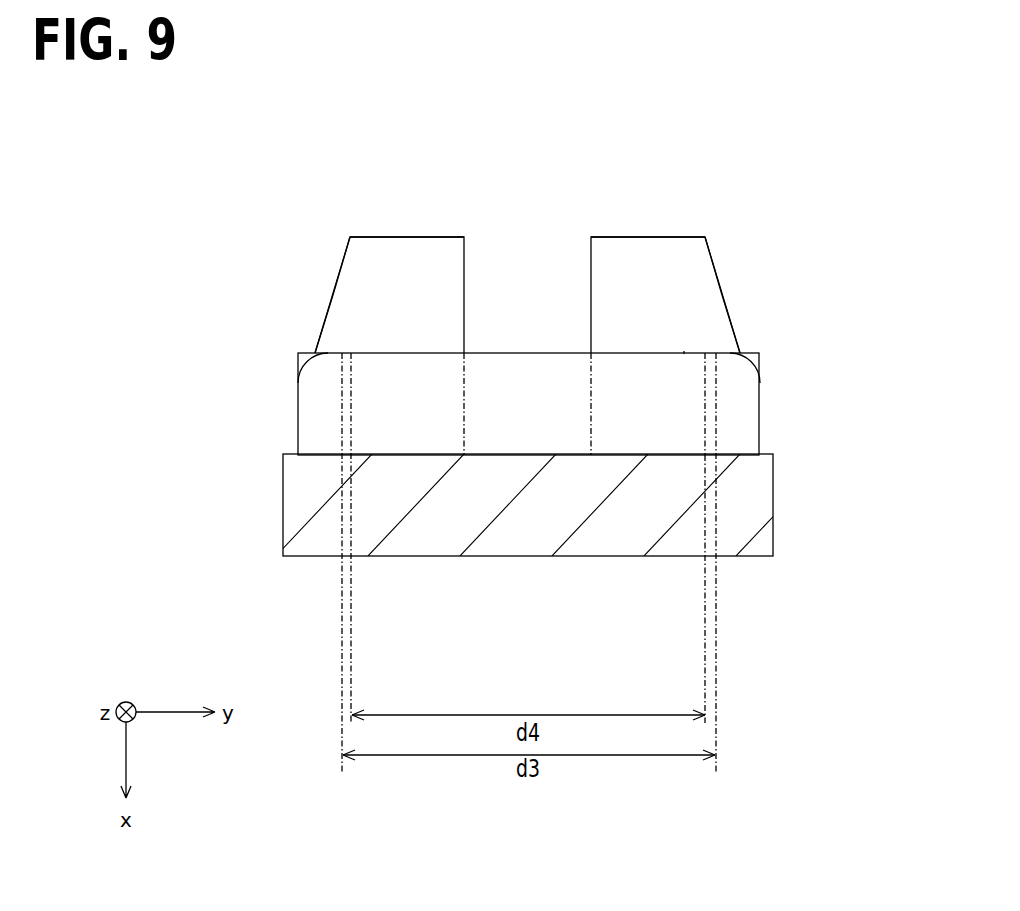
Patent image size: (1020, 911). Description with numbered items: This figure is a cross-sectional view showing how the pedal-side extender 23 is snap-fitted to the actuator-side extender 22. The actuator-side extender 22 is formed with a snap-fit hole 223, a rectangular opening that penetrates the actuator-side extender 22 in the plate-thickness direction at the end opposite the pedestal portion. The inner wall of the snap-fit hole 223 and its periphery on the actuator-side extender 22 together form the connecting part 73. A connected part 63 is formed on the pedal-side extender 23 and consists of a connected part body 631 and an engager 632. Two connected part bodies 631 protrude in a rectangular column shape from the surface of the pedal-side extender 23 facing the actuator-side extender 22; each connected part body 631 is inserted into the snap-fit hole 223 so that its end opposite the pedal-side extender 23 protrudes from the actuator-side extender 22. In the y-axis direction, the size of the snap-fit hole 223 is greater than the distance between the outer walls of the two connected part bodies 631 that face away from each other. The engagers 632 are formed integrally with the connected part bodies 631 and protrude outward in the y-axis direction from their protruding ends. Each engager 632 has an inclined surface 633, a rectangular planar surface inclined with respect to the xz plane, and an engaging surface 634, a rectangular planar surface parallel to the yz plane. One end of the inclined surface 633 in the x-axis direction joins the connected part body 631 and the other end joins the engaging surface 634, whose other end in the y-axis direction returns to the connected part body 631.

The actuator-side extender 22 is at (742, 426).
The pedal-side extender 23 is at (745, 507).
The connected part 63 is at (375, 255).
The connected part body 631 is at (417, 275).
The engager 632 is at (332, 318).
The inclined surface 633 is at (333, 282).
The engaging surface 634 is at (298, 383).
The connecting part 73 is at (684, 351).
The snap-fit hole 223 is at (707, 403).